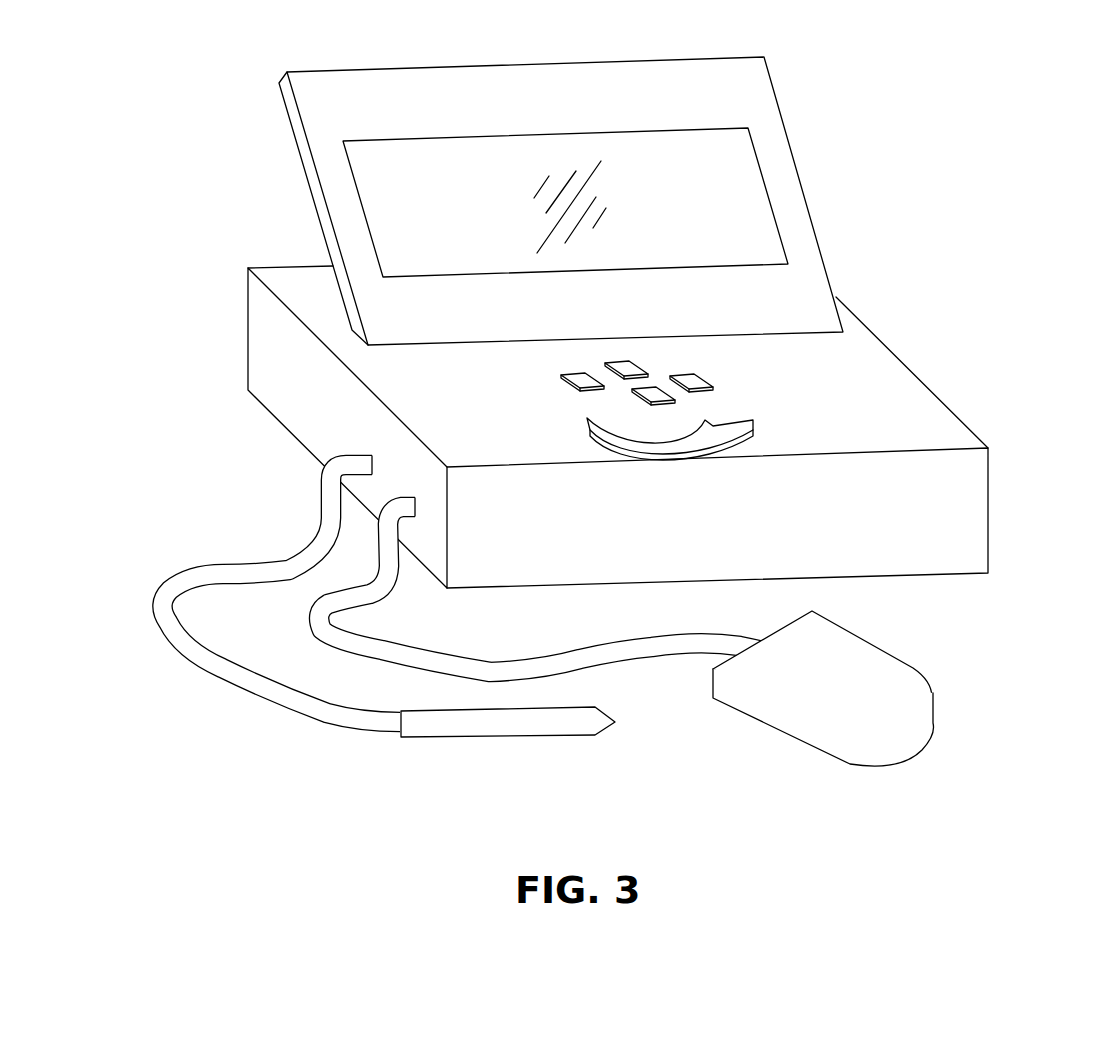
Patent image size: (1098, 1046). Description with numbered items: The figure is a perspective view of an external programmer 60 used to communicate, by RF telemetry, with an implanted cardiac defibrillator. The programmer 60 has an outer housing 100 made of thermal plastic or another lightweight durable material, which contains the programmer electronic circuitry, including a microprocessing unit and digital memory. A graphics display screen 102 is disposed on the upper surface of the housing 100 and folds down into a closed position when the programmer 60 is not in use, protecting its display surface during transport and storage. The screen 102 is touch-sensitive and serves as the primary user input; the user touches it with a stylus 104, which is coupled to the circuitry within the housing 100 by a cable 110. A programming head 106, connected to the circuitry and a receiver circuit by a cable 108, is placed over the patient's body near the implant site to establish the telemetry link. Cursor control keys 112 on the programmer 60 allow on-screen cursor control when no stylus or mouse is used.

The programmer 60 is at (890, 325).
The outer housing 100 is at (988, 487).
The graphics display screen 102 is at (743, 207).
The stylus 104 is at (473, 739).
The programming head 106 is at (913, 662).
The cable 108 is at (633, 665).
The cable 110 is at (223, 685).
The cursor control keys 112 is at (728, 402).